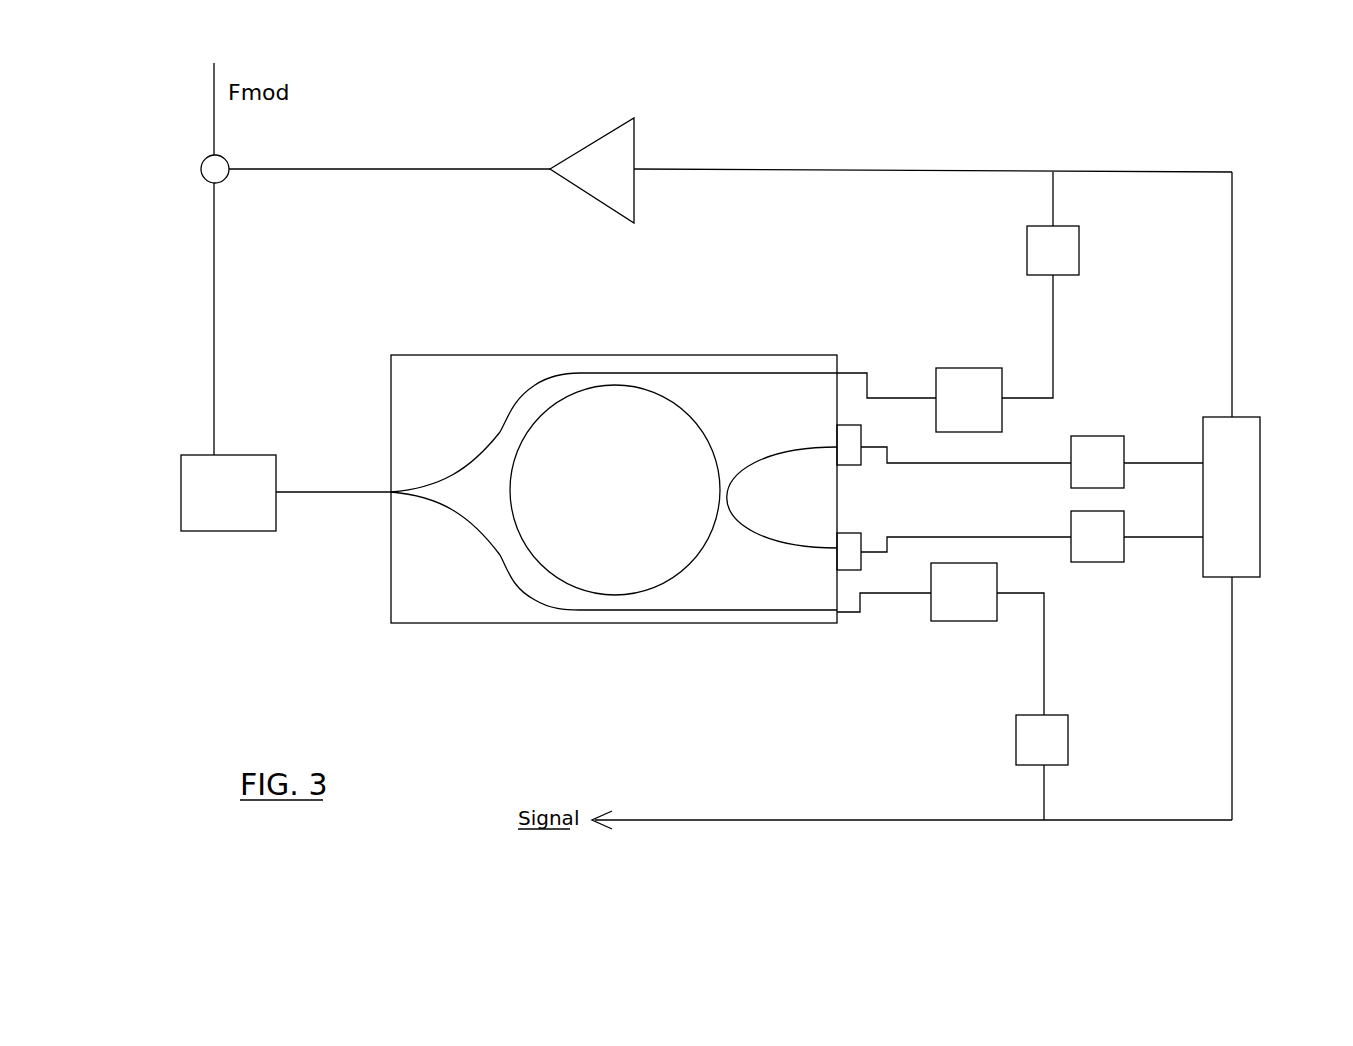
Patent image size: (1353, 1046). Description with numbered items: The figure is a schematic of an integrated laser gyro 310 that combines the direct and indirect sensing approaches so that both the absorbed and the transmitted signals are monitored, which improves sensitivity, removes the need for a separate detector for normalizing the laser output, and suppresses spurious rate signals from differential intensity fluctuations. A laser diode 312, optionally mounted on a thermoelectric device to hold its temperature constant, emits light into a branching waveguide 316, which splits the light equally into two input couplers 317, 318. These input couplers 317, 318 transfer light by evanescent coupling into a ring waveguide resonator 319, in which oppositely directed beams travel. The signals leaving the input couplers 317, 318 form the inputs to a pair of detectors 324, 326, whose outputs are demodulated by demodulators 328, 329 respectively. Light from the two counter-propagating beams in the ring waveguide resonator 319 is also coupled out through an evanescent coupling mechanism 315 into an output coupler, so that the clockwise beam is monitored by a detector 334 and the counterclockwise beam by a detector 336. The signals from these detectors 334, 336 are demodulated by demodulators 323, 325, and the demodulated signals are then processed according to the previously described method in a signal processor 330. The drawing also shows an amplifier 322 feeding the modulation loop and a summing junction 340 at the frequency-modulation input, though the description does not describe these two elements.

The laser gyro 310 is at (492, 152).
The laser diode 312 is at (224, 531).
The evanescent coupling mechanism 315 is at (715, 500).
The branching waveguide 316 is at (376, 492).
The input coupler 317 is at (473, 465).
The input coupler 318 is at (472, 520).
The ring waveguide resonator 319 is at (690, 415).
The amplifier 322 is at (636, 186).
The demodulator 323 is at (1105, 436).
The detector 324 is at (963, 368).
The demodulator 325 is at (1097, 562).
The detector 326 is at (950, 621).
The demodulator 328 is at (1079, 242).
The demodulator 329 is at (1068, 752).
The signal processor 330 is at (1260, 460).
The detector 334 is at (848, 425).
The detector 336 is at (845, 571).
The summing junction 340 is at (205, 157).